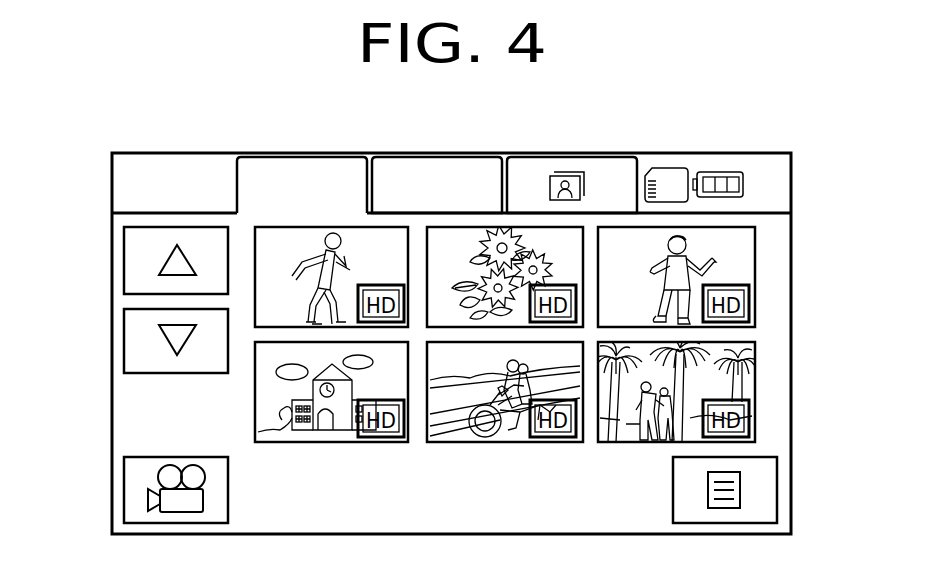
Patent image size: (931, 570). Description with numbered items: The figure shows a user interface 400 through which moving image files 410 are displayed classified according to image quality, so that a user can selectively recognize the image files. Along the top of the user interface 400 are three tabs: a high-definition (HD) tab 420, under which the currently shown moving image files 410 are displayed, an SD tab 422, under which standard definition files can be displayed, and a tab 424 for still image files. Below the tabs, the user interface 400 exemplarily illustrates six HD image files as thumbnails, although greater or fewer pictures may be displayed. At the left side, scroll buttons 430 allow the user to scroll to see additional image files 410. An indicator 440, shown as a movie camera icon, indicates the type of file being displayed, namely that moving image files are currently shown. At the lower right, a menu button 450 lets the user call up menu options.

The user interface 400 is at (190, 103).
The moving image files 410 is at (755, 277).
The high-definition (HD) tab 420 is at (292, 157).
The SD tab 422 is at (435, 157).
The still image tab 424 is at (574, 157).
The scroll buttons 430 is at (121, 301).
The indicator 440 is at (121, 481).
The menu button 450 is at (777, 490).